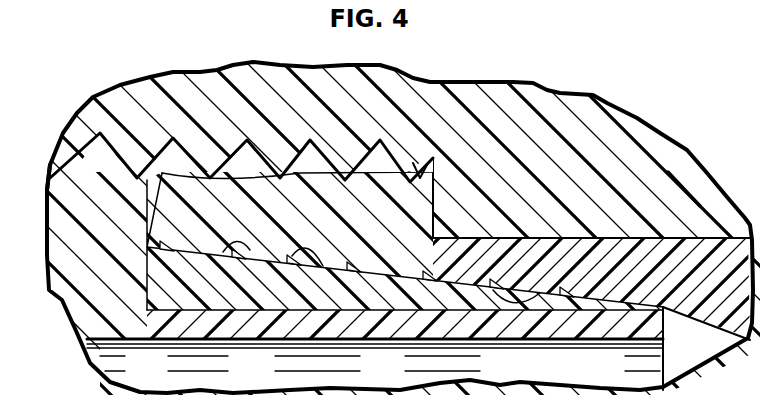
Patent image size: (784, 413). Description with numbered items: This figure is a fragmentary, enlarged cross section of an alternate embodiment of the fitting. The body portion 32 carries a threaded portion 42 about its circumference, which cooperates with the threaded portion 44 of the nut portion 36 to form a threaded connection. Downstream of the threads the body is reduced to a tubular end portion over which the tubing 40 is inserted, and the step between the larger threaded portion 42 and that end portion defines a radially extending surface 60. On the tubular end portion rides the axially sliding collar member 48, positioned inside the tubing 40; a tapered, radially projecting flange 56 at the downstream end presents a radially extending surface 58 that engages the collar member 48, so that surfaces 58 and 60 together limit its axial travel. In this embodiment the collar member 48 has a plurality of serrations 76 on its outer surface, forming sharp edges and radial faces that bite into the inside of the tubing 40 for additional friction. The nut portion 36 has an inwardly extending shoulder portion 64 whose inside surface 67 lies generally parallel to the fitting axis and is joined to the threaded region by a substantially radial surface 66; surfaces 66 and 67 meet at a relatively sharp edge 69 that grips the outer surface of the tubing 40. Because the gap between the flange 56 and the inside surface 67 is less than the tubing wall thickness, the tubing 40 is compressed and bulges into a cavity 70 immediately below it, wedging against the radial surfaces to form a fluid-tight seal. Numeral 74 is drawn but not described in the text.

The body portion 32 is at (60, 305).
The nut portion 36 is at (641, 114).
The tubing 40 is at (735, 346).
The threaded portion 42 is at (72, 140).
The threaded portion 44 is at (243, 143).
The collar member 48 is at (258, 296).
The flange 56 is at (590, 300).
The radially extending surface 58 is at (532, 300).
The radially extending surface 60 is at (153, 308).
The shoulder portion 64 is at (668, 172).
The radially extending surface 66 is at (421, 163).
The inside surface 67 is at (680, 243).
The sharp edge 69 is at (417, 262).
The cavity 70 is at (513, 307).
The film 74 is at (177, 372).
The serrations 76 is at (278, 250).